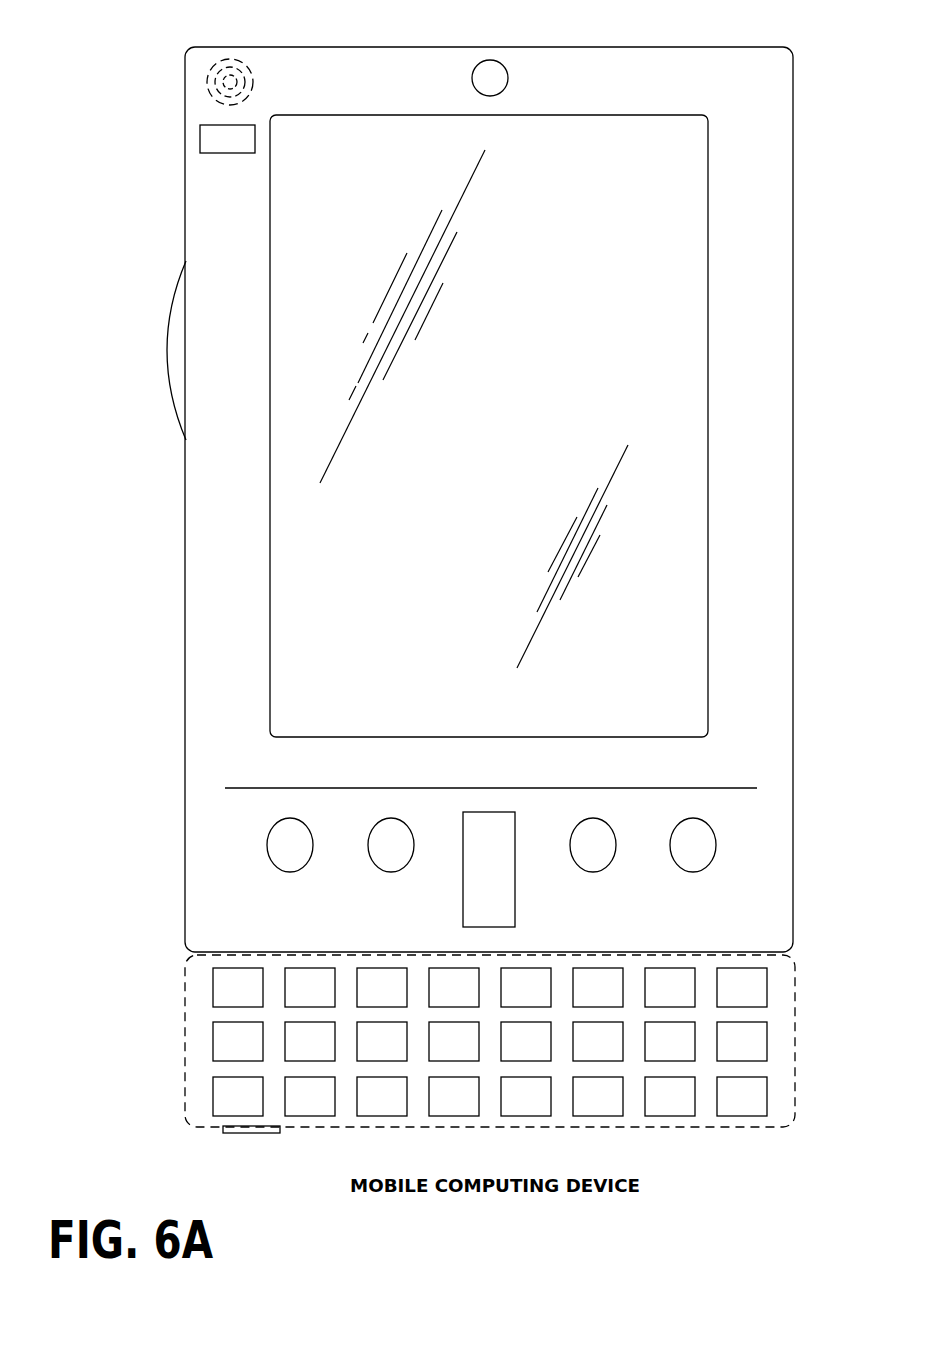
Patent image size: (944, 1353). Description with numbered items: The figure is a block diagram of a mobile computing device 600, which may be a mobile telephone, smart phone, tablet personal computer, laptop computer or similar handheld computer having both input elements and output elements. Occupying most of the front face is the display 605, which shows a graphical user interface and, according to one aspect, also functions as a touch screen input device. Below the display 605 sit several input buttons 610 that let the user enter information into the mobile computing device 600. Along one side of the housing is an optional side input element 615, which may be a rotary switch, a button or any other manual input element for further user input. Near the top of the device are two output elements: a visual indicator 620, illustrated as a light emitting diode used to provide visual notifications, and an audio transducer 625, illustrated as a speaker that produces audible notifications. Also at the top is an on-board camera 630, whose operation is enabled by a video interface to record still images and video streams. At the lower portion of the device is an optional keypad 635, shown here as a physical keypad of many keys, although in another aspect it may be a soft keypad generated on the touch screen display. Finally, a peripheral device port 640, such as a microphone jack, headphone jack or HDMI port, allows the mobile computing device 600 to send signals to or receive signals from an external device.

The mobile computing device 600 is at (760, 47).
The display 605 is at (294, 588).
The input buttons 610 is at (290, 872).
The side input element 615 is at (165, 352).
The visual indicator 620 is at (200, 140).
The audio transducer 625 is at (207, 82).
The on-board camera 630 is at (489, 60).
The keypad 635 is at (190, 1040).
The peripheral device port 640 is at (230, 1134).